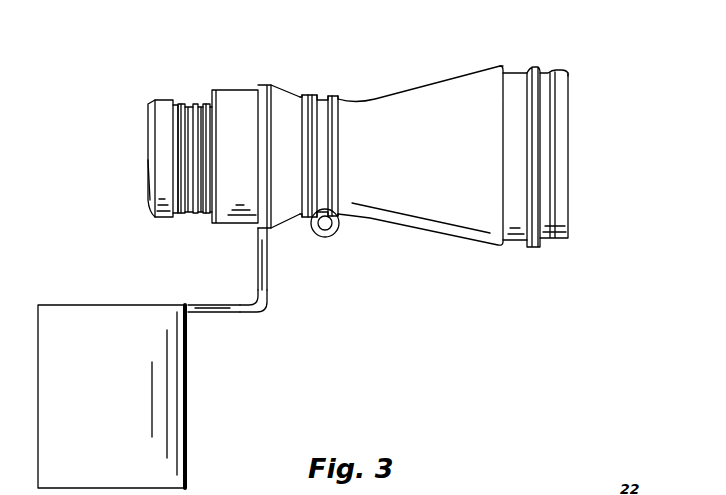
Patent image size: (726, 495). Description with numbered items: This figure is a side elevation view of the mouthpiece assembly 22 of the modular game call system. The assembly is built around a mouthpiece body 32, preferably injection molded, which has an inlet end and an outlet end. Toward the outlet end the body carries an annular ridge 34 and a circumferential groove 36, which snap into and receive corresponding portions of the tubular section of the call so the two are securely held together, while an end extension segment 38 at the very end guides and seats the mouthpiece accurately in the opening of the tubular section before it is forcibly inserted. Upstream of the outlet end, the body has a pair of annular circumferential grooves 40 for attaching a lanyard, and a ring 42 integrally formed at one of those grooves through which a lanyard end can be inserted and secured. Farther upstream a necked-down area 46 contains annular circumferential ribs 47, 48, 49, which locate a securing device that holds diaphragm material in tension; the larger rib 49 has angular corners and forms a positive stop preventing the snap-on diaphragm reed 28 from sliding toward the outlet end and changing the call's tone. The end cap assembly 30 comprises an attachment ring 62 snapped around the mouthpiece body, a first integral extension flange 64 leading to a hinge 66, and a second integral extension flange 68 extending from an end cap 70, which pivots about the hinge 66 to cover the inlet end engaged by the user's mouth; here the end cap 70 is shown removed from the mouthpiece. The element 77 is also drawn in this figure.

The mouthpiece assembly 22 is at (596, 52).
The snap-on diaphragm reed 28 is at (150, 92).
The end cap assembly 30 is at (198, 427).
The mouthpiece body 32 is at (402, 90).
The annular ridge 34 is at (540, 246).
The circumferential groove 36 is at (510, 242).
The end extension segment 38 is at (562, 70).
The annular circumferential grooves 40 is at (325, 99).
The ring 42 is at (338, 233).
The necked-down area 46 is at (186, 223).
The annular circumferential rib 47 is at (202, 102).
The annular circumferential rib 48 is at (190, 102).
The annular circumferential rib 49 is at (175, 101).
The attachment ring 62 is at (256, 122).
The first integral extension flange 64 is at (267, 255).
The hinge 66 is at (267, 308).
The second integral extension flange 68 is at (207, 312).
The end cap 70 is at (120, 405).
The cap shading lines 77 is at (148, 223).